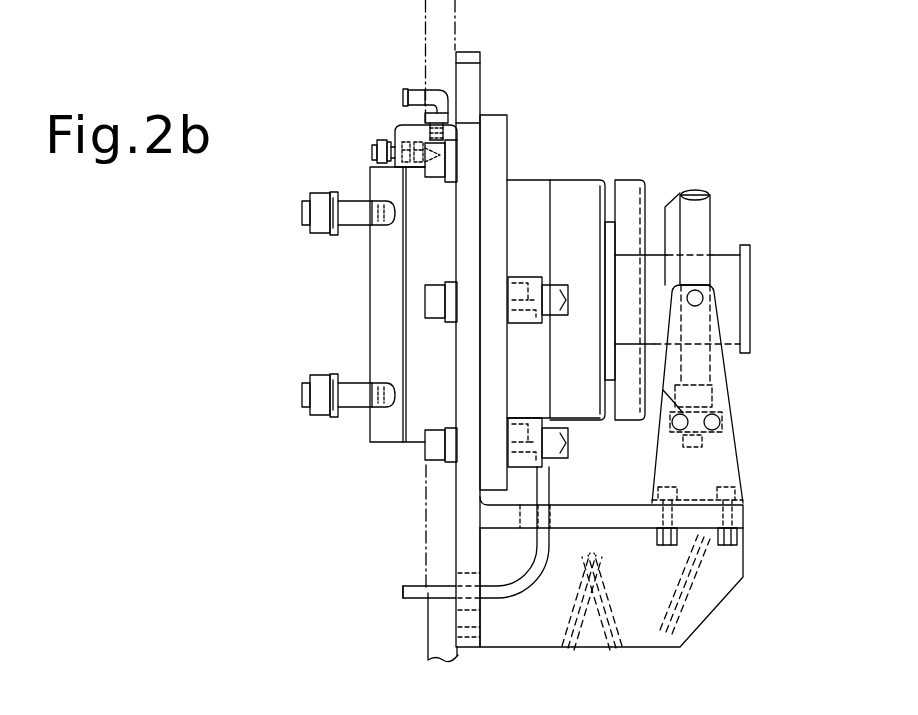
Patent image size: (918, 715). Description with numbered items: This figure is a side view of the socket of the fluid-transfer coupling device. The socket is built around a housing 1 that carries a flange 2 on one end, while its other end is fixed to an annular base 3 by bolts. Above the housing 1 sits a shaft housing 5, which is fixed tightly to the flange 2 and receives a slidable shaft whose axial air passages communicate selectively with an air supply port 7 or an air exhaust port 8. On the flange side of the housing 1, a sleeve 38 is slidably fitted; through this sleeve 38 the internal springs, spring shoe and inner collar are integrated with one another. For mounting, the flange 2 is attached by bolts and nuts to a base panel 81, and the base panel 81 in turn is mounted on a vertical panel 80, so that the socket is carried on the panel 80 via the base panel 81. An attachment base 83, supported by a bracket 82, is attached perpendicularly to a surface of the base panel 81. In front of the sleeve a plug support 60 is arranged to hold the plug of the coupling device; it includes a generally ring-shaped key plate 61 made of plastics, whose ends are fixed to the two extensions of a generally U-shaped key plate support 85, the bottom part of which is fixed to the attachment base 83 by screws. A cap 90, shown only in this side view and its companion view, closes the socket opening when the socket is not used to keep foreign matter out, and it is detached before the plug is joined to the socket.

The housing 1 is at (420, 425).
The flange 2 is at (490, 130).
The annular base 3 is at (392, 427).
The shaft housing 5 is at (407, 135).
The air supply port 7 is at (400, 97).
The air exhaust port 8 is at (375, 153).
The sleeve 38 is at (578, 193).
The plug support 60 is at (715, 178).
The key plate 61 is at (698, 230).
The vertical panel 80 is at (443, 35).
The base panel 81 is at (467, 90).
The bracket 82 is at (697, 607).
The attachment base 83 is at (700, 520).
The key plate support 85 is at (725, 460).
The cap 90 is at (723, 267).